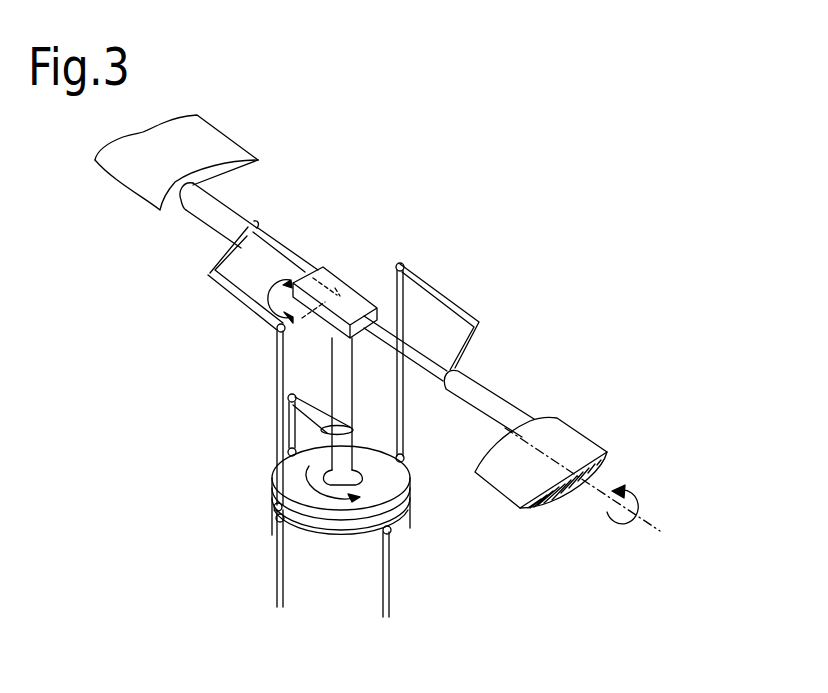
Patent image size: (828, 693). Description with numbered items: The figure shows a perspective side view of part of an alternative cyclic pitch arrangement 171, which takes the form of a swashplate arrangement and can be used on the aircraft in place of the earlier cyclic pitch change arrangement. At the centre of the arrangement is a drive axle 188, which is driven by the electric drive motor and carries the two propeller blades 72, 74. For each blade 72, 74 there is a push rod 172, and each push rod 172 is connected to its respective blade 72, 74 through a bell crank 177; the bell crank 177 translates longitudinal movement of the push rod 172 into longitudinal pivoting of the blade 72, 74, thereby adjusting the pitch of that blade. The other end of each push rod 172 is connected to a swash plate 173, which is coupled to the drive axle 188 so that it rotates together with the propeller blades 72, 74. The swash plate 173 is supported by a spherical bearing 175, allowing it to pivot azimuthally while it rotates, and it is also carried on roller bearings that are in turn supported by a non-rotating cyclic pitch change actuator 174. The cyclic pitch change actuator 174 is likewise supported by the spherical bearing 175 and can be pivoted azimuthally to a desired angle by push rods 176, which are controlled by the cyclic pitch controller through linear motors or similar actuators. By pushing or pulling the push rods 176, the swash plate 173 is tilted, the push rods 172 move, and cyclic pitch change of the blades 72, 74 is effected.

The blade 72 is at (575, 420).
The blade 74 is at (243, 146).
The cyclic pitch arrangement 171 is at (512, 265).
The push rod 172 is at (275, 345).
The swash plate 173 is at (303, 527).
The cyclic pitch change actuator 174 is at (393, 532).
The spherical bearing 175 is at (312, 466).
The push rod 176 is at (275, 595).
The bell crank 177 is at (243, 311).
The drive axle 188 is at (333, 394).